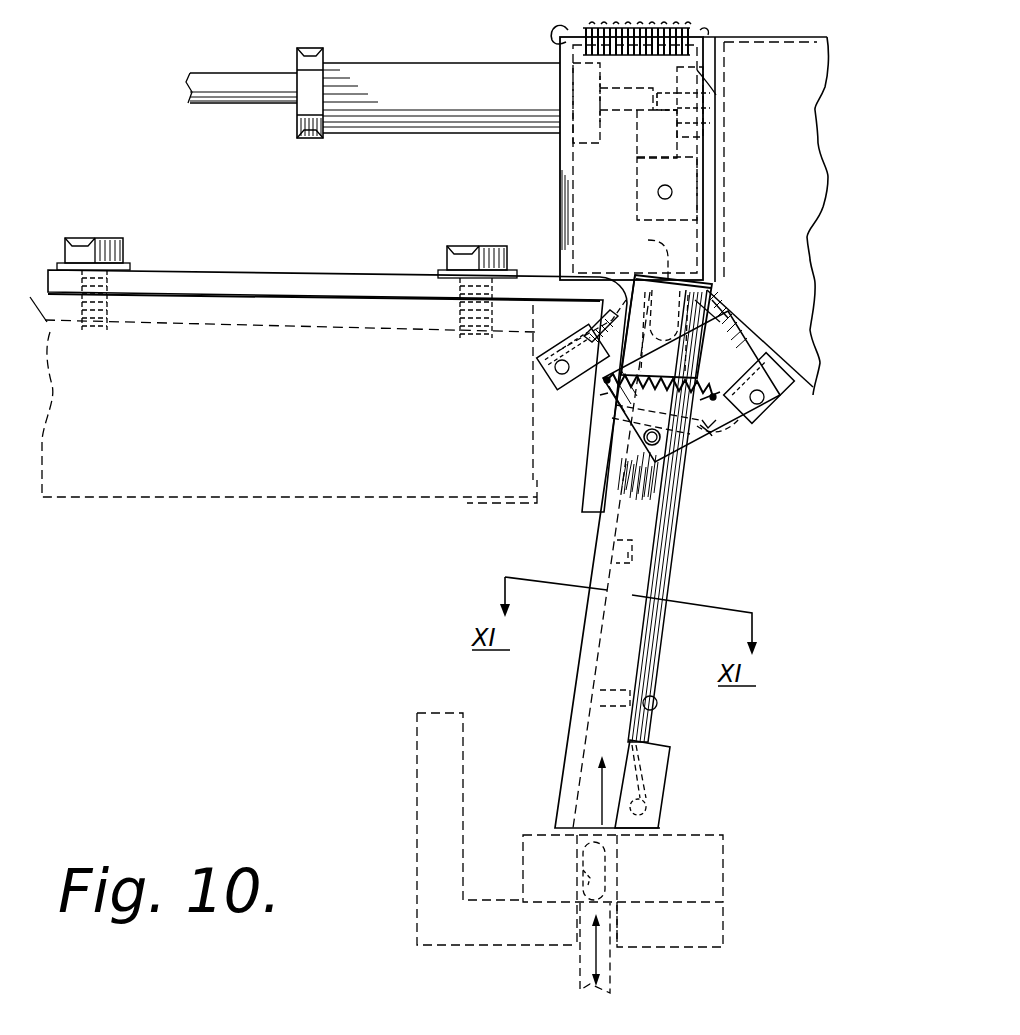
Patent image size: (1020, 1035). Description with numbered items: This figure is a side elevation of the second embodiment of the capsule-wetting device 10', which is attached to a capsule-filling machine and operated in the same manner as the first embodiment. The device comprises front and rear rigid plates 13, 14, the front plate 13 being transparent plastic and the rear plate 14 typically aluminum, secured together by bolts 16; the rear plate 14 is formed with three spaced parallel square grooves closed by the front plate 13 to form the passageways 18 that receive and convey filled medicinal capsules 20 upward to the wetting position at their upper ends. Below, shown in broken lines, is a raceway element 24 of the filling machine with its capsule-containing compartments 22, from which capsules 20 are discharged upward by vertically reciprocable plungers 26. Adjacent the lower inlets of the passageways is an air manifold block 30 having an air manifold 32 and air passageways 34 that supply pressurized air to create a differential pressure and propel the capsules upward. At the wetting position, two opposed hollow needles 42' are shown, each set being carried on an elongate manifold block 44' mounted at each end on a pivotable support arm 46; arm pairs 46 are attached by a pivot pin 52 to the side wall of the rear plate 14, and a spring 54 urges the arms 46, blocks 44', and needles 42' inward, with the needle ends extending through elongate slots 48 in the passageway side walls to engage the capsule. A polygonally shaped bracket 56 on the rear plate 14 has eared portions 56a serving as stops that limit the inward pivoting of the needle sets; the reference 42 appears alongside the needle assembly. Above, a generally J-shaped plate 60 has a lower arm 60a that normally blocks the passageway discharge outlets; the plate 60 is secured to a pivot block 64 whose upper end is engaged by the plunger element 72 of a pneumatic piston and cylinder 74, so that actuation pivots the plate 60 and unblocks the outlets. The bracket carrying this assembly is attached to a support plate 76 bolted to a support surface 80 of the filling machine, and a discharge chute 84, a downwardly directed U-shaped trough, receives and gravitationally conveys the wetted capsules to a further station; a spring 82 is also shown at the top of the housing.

The capsule-wetting device 10' is at (736, 547).
The front rigid plate 13 is at (690, 522).
The rear rigid plate 14 is at (606, 530).
The bolts 16 is at (712, 430).
The passageways 18 is at (615, 548).
The filled capsules 20 is at (702, 292).
The capsule-containing compartments 22 is at (584, 872).
The raceway element 24 is at (720, 874).
The plungers 26 is at (616, 977).
The air manifold block 30 is at (668, 788).
The air manifold 32 is at (660, 810).
The air passageways 34 is at (640, 770).
The bracket arm 42 is at (707, 311).
The hollow needles 42' is at (676, 338).
The elongate manifold block 44' is at (652, 373).
The pivotable support arm 46 is at (618, 410).
The elongate slots 48 is at (598, 392).
The pivot pin 52 is at (700, 444).
The spring 54 is at (660, 368).
The polygonally shaped bracket 56 is at (732, 314).
The eared portions 56a is at (744, 425).
The plate 60 is at (638, 159).
The lower arm 60a is at (636, 253).
The pivot block 64 is at (640, 178).
The plunger element 72 is at (636, 129).
The pneumatic piston and cylinder 74 is at (414, 70).
The support plate 76 is at (260, 283).
The support surface 80 is at (170, 490).
The spring 82 is at (625, 30).
The discharge chute 84 is at (786, 152).